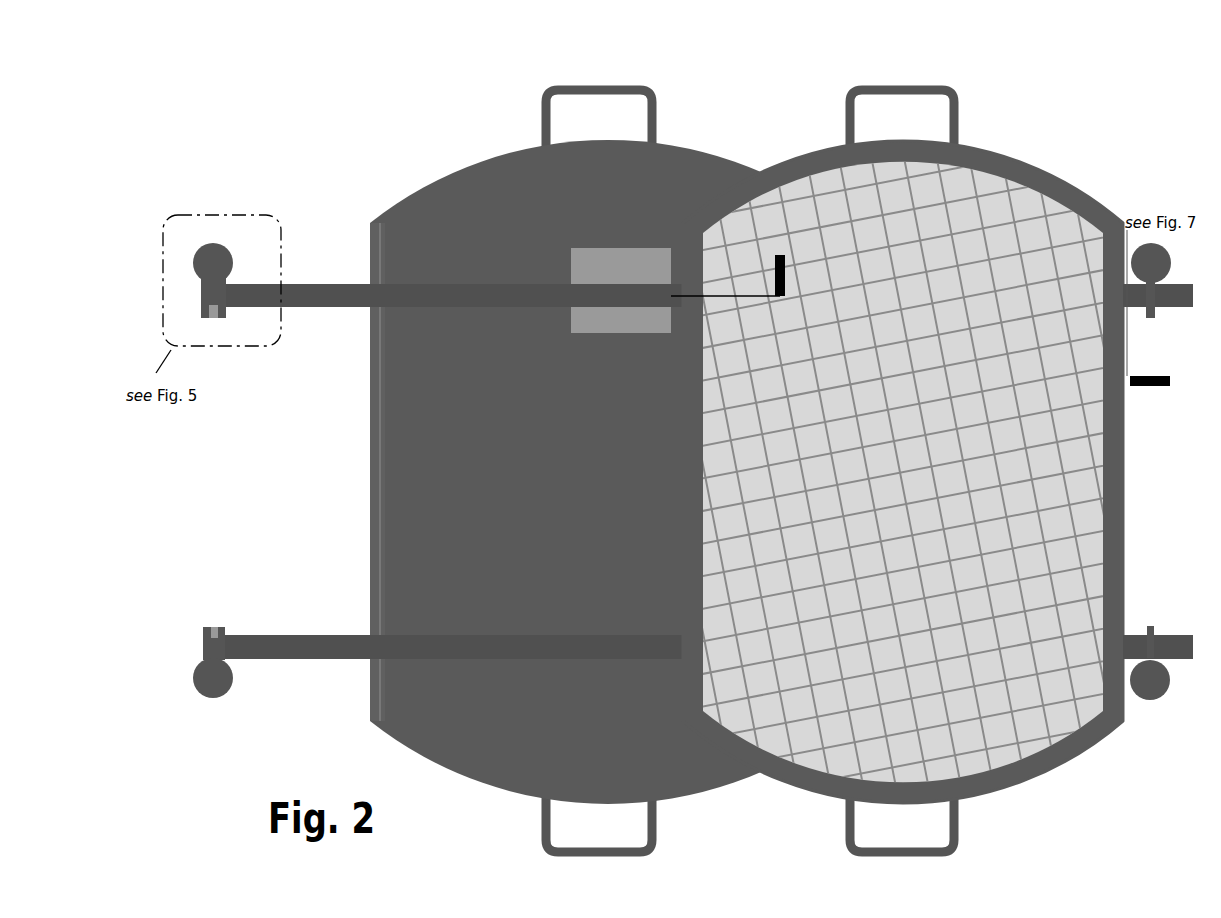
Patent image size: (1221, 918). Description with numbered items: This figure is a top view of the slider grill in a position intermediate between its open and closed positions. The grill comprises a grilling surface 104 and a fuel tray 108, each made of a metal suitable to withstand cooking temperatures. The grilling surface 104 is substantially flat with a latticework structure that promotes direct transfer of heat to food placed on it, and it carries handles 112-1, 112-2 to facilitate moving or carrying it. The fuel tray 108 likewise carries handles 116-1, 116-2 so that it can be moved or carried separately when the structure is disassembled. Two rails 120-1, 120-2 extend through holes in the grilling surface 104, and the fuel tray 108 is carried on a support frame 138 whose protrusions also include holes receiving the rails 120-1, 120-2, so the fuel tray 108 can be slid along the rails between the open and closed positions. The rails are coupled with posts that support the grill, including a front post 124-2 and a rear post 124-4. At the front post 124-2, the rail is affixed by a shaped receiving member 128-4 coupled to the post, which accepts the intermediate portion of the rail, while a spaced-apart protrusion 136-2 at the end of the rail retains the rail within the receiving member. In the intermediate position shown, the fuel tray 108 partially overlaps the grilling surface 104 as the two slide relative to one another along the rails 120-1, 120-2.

The grilling surface 104 is at (1058, 178).
The fuel tray 108 is at (426, 185).
The handle 112-1 is at (840, 806).
The handle 112-2 is at (918, 80).
The handle 116-1 is at (648, 803).
The handle 116-2 is at (610, 80).
The rail 120-1 is at (280, 300).
The rail 120-2 is at (303, 628).
The front post 124-2 is at (216, 684).
The rear post 124-4 is at (1145, 686).
The shaped receiving member 128-4 is at (207, 618).
The protrusion 136-2 is at (195, 641).
The support frame 138 is at (363, 715).